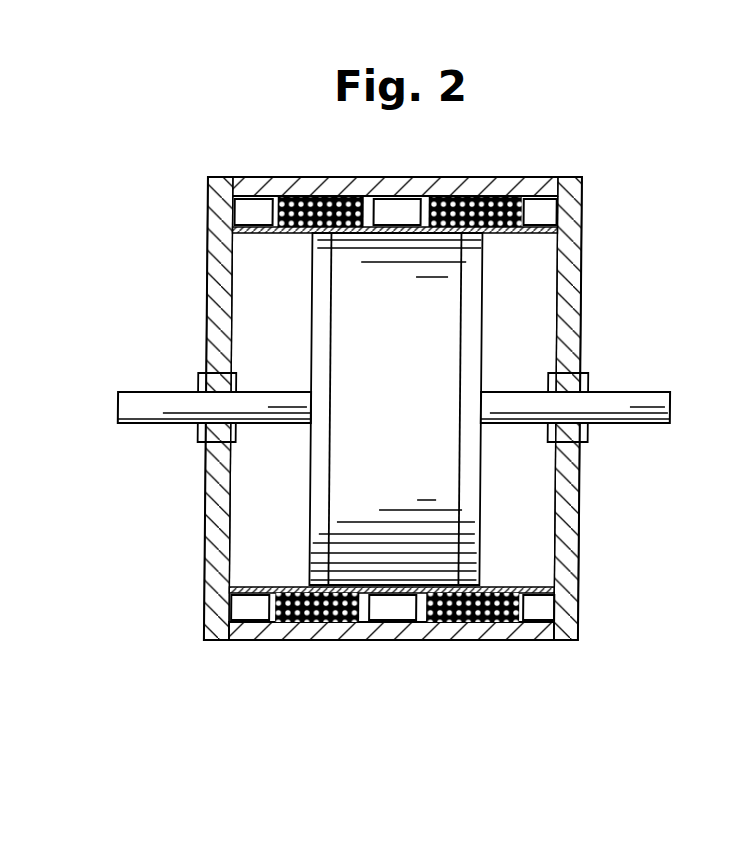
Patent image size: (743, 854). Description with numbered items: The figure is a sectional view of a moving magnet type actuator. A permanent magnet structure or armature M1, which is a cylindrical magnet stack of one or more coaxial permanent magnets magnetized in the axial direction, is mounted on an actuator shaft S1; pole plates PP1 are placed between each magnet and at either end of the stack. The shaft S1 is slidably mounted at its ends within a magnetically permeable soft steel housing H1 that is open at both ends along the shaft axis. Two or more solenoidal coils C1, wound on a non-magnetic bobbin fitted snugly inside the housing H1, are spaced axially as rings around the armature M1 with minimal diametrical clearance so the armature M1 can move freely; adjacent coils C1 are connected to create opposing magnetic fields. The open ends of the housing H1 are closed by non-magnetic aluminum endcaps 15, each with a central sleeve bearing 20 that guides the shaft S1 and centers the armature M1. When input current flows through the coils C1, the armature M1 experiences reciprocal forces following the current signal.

The endcap 15 is at (565, 534).
The housing H1 is at (253, 640).
The solenoidal coils C1 is at (440, 618).
The permanent magnet structure or armature M1 is at (432, 291).
The pole plate PP1 is at (470, 338).
The actuator shaft S1 is at (617, 400).
The sleeve bearing 20 is at (588, 438).